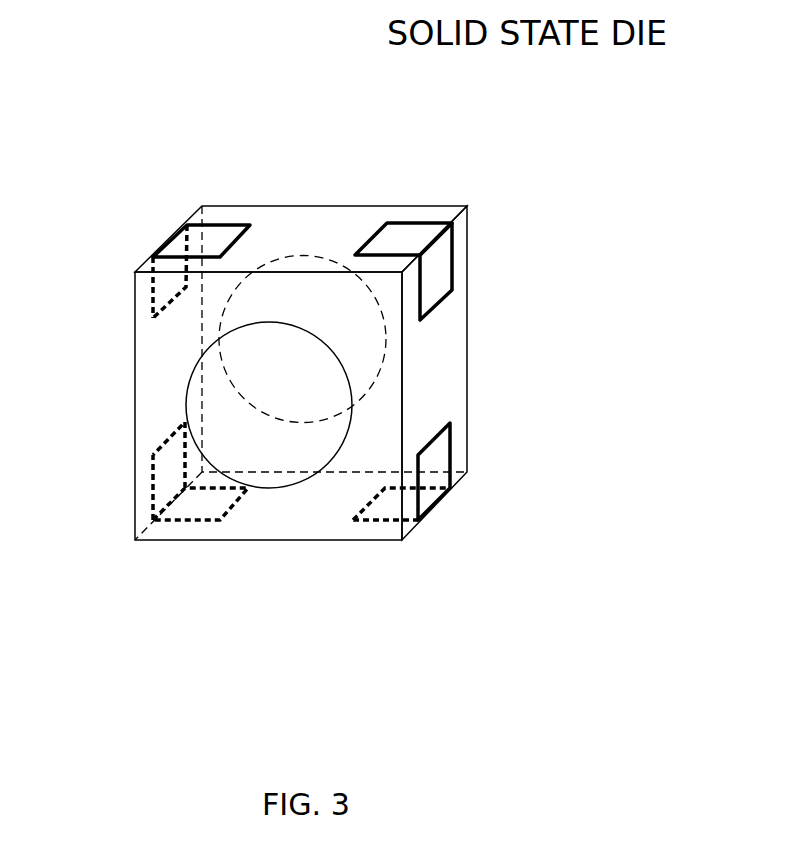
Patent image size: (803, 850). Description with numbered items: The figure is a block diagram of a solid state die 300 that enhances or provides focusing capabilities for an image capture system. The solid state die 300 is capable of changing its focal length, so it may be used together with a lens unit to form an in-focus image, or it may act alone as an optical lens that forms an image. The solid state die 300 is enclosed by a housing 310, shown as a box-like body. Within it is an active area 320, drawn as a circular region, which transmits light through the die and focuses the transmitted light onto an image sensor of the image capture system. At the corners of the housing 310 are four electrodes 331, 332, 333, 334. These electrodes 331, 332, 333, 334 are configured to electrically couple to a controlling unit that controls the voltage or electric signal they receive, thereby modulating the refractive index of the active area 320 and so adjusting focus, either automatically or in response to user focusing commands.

The solid state die 300 is at (165, 130).
The housing 310 is at (315, 206).
The active area 320 is at (290, 483).
The electrode 331 is at (453, 307).
The electrode 332 is at (453, 503).
The electrode 333 is at (153, 481).
The electrode 334 is at (153, 297).